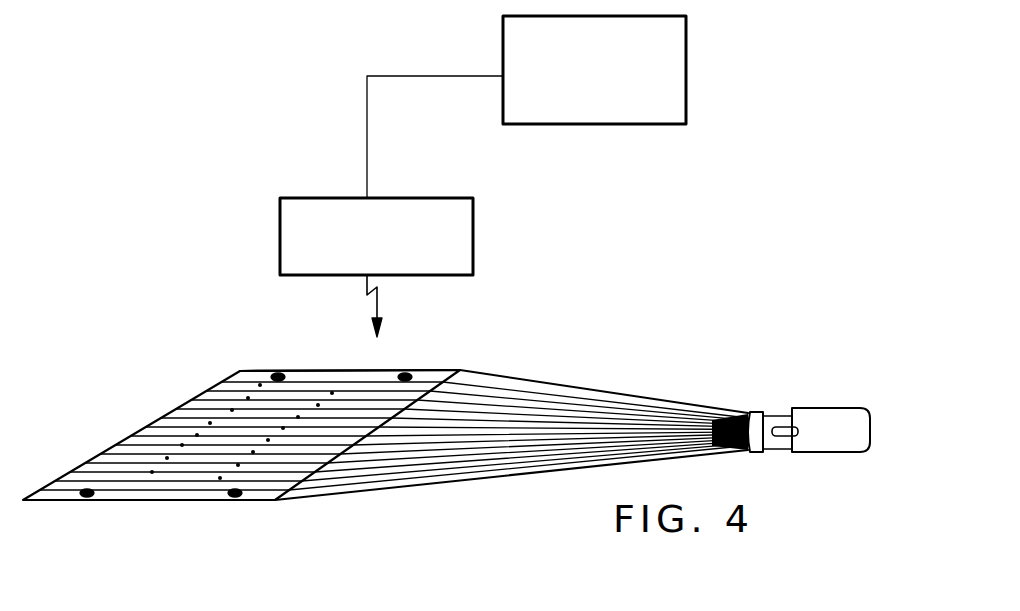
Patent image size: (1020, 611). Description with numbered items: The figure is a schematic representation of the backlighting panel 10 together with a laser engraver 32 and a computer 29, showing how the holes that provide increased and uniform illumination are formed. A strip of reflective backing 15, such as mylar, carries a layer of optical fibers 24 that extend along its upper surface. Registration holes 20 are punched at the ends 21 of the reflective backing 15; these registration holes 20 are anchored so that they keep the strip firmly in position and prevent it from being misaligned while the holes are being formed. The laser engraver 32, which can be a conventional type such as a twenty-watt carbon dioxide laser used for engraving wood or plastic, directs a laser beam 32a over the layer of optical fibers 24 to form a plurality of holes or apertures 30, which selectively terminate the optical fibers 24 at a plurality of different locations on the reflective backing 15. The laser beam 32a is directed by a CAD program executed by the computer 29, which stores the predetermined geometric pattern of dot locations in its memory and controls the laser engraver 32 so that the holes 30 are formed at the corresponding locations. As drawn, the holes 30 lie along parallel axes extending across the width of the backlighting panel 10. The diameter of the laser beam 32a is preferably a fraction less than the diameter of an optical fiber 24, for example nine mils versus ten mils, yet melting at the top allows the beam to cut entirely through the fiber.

The backlighting panel 10 is at (446, 454).
The reflective backing 15 is at (207, 493).
The registration holes 20 is at (412, 372).
The ends 21 is at (243, 371).
The optical fibers 24 is at (118, 458).
The computer 29 is at (652, 118).
The holes 30 is at (230, 408).
The laser engraver 32 is at (470, 235).
The laser beam 32a is at (378, 305).